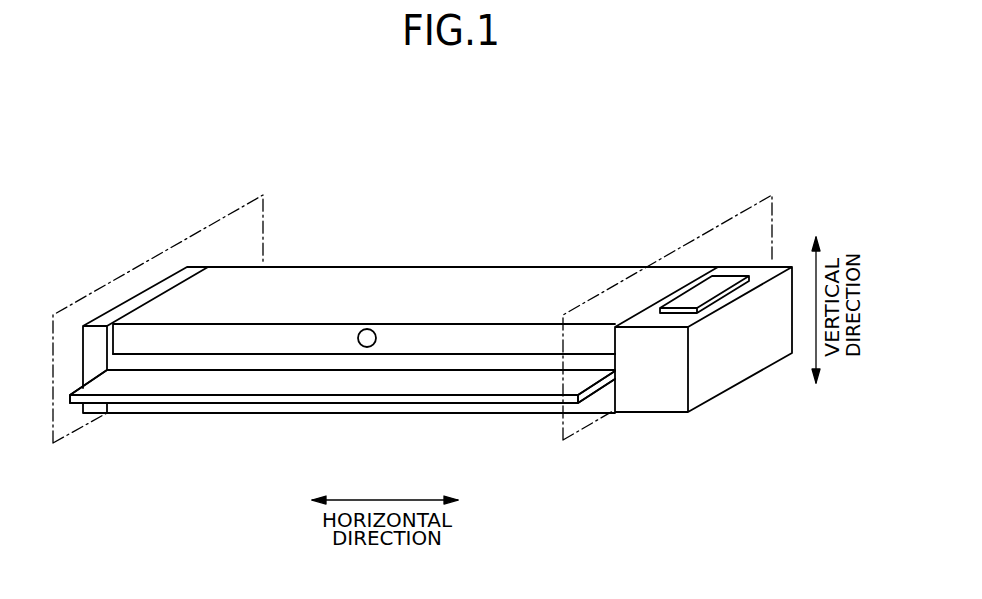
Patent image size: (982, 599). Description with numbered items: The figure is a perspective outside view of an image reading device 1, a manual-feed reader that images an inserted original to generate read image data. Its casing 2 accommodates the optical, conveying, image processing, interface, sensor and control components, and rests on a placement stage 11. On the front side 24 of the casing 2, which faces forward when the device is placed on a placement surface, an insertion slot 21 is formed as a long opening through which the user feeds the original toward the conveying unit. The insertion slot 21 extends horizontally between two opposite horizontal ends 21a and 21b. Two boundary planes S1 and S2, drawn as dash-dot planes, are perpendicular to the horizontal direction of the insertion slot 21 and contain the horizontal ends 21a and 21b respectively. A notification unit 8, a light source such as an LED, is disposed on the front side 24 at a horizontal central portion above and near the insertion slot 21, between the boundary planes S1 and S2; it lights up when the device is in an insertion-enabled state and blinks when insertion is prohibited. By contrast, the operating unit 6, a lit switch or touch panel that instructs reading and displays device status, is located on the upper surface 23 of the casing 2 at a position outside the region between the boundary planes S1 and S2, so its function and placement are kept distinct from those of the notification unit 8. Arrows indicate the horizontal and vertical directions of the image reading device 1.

The image reading device 1 is at (92, 152).
The casing 2 is at (494, 260).
The operating unit 6 is at (717, 287).
The notification unit 8 is at (358, 338).
The placement stage 11 is at (362, 401).
The insertion slot 21 is at (220, 362).
The horizontal end of the insertion slot 21a is at (113, 360).
The horizontal end of the insertion slot 21b is at (615, 362).
The upper surface 23 is at (362, 283).
The front side 24 is at (477, 340).
The boundary plane S1 is at (212, 222).
The boundary plane S2 is at (722, 222).